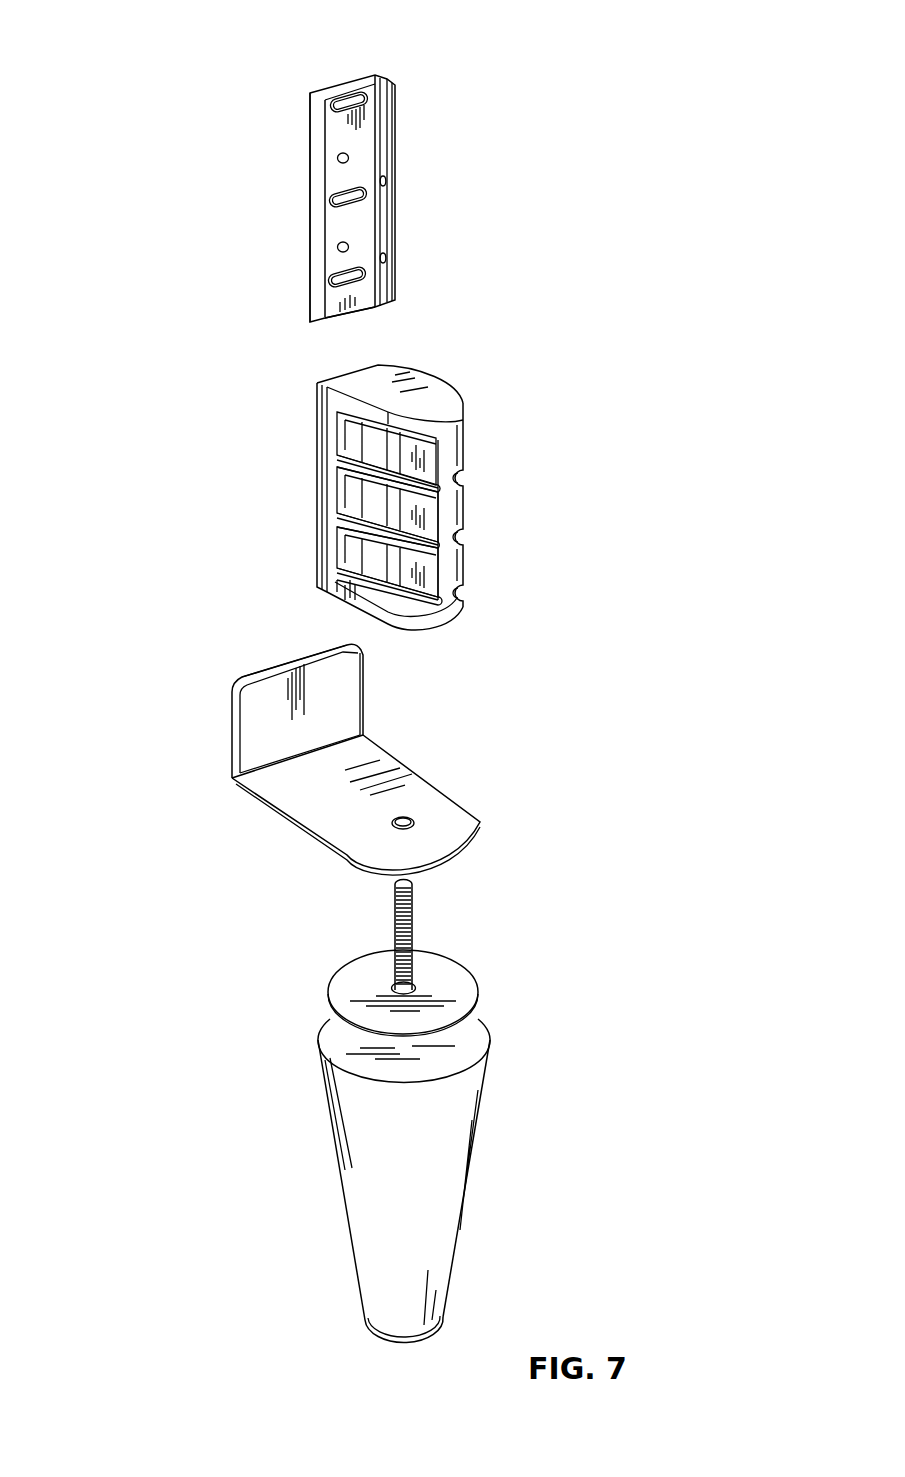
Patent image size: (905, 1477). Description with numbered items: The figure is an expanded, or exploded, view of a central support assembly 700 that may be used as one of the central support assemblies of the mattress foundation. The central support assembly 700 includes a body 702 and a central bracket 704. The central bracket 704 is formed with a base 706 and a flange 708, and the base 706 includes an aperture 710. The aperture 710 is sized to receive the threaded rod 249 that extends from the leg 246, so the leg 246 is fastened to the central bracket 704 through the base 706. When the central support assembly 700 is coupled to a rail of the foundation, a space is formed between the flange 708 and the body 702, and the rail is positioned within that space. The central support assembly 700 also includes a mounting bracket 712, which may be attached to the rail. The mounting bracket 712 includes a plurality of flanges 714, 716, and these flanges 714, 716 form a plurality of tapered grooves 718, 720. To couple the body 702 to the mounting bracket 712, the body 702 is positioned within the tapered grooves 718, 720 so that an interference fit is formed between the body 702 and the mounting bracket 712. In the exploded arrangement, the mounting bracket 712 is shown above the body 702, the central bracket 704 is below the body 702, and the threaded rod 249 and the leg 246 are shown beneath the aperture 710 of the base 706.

The central support assembly 700 is at (126, 42).
The body 702 is at (337, 438).
The central bracket 704 is at (252, 732).
The base 706 is at (327, 822).
The flange 708 is at (297, 663).
The aperture 710 is at (403, 816).
The mounting bracket 712 is at (340, 131).
The flange 714 is at (318, 281).
The flange 716 is at (386, 258).
The tapered groove 718 is at (318, 212).
The tapered groove 720 is at (386, 183).
The threaded rod 249 is at (405, 904).
The leg 246 is at (443, 1192).